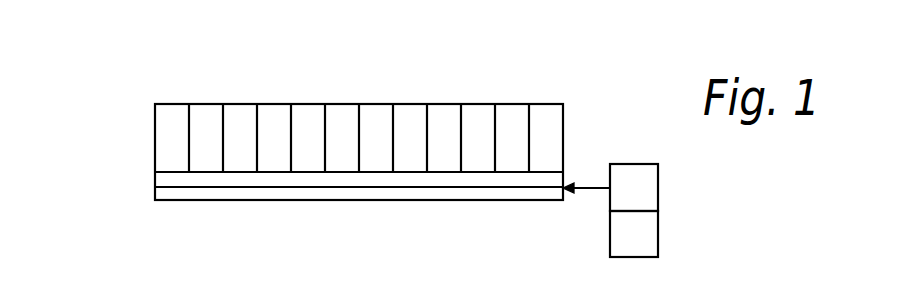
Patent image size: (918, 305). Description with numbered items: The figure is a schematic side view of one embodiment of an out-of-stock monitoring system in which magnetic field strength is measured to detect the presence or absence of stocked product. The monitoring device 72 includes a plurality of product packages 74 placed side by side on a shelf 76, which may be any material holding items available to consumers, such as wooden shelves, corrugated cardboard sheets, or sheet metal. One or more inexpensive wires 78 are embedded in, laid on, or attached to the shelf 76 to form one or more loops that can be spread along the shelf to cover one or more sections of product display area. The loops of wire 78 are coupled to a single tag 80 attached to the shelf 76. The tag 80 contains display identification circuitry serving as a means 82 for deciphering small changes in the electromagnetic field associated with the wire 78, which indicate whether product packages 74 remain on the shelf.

The monitoring device 72 is at (125, 105).
The product packages 74 is at (518, 103).
The shelf 76 is at (218, 200).
The wires 78 is at (407, 187).
The tag 80 is at (632, 164).
The means for deciphering changes in the electromagnetic field 82 is at (658, 233).